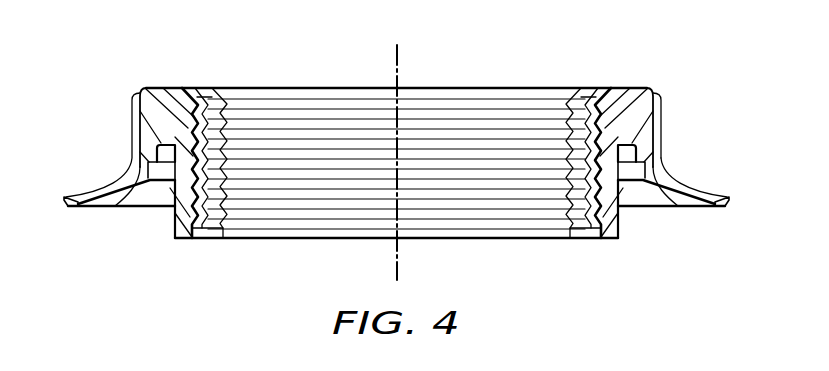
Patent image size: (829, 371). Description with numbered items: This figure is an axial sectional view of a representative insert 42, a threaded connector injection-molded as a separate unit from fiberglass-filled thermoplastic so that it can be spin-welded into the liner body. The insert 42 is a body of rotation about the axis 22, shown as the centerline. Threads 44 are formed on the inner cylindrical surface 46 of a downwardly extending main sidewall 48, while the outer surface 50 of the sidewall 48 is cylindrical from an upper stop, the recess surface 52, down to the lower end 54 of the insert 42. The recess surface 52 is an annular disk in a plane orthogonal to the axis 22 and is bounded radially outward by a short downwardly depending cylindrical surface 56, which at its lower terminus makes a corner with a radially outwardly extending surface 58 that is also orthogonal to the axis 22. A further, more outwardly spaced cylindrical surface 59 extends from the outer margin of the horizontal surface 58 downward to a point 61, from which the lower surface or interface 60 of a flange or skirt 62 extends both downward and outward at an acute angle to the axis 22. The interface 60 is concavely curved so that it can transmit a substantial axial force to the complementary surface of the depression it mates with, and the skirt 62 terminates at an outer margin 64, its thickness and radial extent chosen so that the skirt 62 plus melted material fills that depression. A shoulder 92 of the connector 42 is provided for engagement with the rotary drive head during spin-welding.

The insert 42 is at (340, 61).
The axis 22 is at (399, 58).
The threads 44 is at (460, 210).
The inner cylindrical surface 46 is at (203, 240).
The lower end 54 is at (614, 240).
The recess surface 52 is at (166, 146).
The downwardly depending cylindrical surface 56 is at (139, 127).
The radially outwardly extending surface 58 is at (133, 161).
The outer surface 50 is at (165, 193).
The point 61 is at (140, 192).
The cylindrical surface 59 is at (98, 207).
The outer margin 64 is at (65, 205).
The shoulder 92 is at (627, 91).
The main sidewall 48 is at (640, 118).
The skirt 62 is at (668, 166).
The interface 60 is at (670, 188).